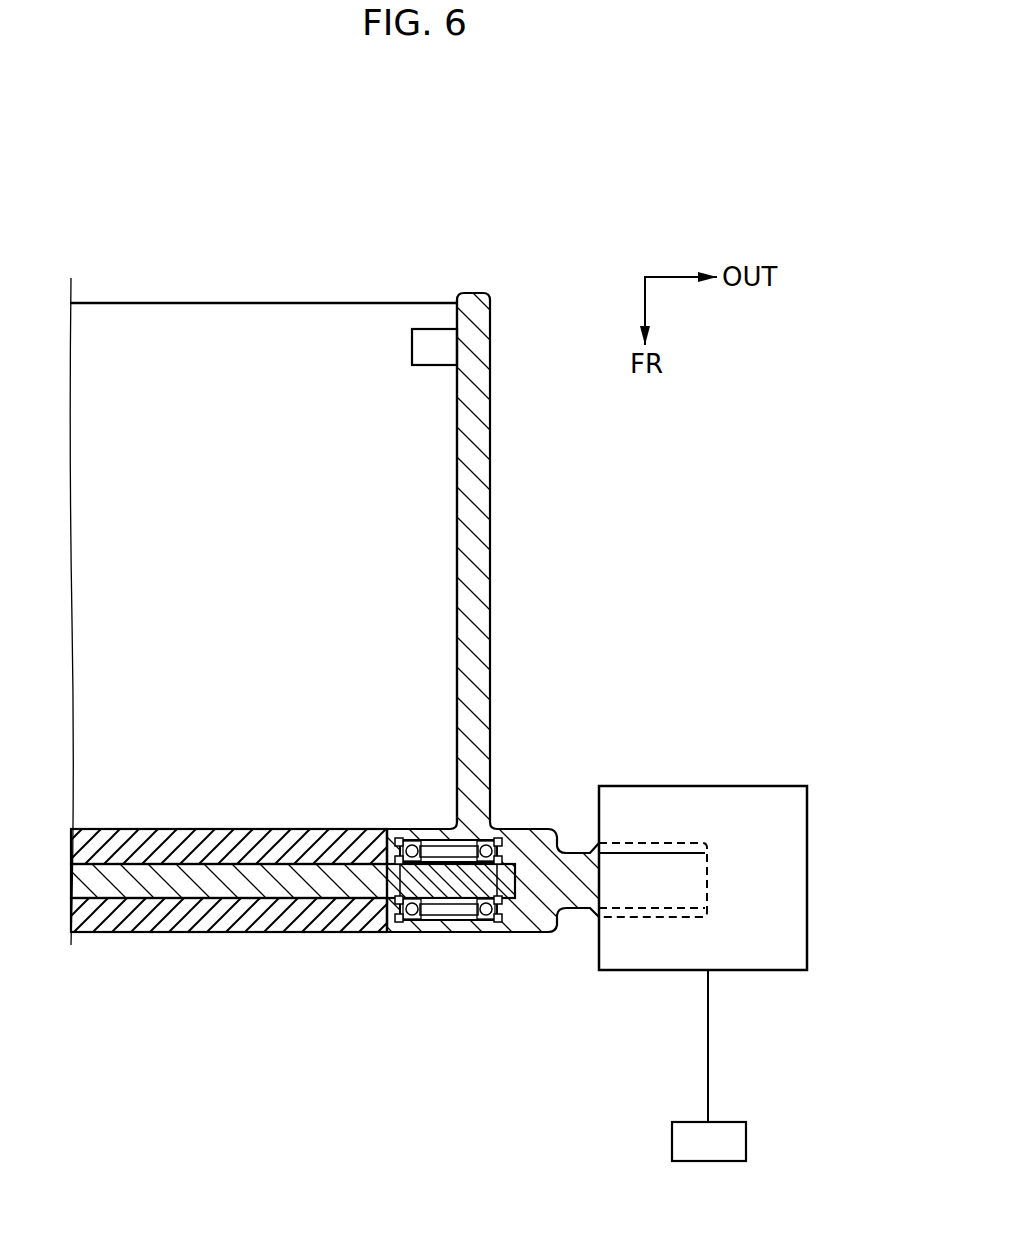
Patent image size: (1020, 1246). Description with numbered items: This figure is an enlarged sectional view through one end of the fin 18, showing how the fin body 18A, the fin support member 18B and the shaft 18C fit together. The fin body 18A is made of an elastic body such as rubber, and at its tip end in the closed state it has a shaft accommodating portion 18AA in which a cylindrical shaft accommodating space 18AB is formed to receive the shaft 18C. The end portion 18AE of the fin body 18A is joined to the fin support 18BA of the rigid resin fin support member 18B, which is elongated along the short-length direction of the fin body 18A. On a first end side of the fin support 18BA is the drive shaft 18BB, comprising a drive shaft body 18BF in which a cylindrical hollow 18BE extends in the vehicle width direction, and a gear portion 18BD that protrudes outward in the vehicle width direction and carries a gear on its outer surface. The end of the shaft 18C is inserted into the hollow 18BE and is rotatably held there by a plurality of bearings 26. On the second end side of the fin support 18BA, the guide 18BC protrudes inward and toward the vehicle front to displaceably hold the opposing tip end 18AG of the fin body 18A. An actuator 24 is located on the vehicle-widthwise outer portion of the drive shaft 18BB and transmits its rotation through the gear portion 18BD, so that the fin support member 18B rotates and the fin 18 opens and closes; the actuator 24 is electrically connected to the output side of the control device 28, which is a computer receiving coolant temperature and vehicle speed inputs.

The fin 18 is at (392, 633).
The fin body 18A is at (263, 621).
The shaft accommodating portion 18AA is at (258, 920).
The shaft accommodating space 18AB is at (132, 896).
The end portion 18AE is at (444, 513).
The tip end 18AG is at (240, 313).
The fin support member 18B is at (551, 633).
The fin support 18BA is at (476, 540).
The drive shaft 18BB is at (533, 918).
The guide 18BC is at (434, 345).
The gear portion 18BD is at (673, 842).
The hollow 18BE is at (455, 922).
The drive shaft body 18BF is at (473, 921).
The shaft 18C is at (328, 882).
The actuator 24 is at (753, 972).
The bearings 26 is at (412, 840).
The control device 28 is at (672, 1142).